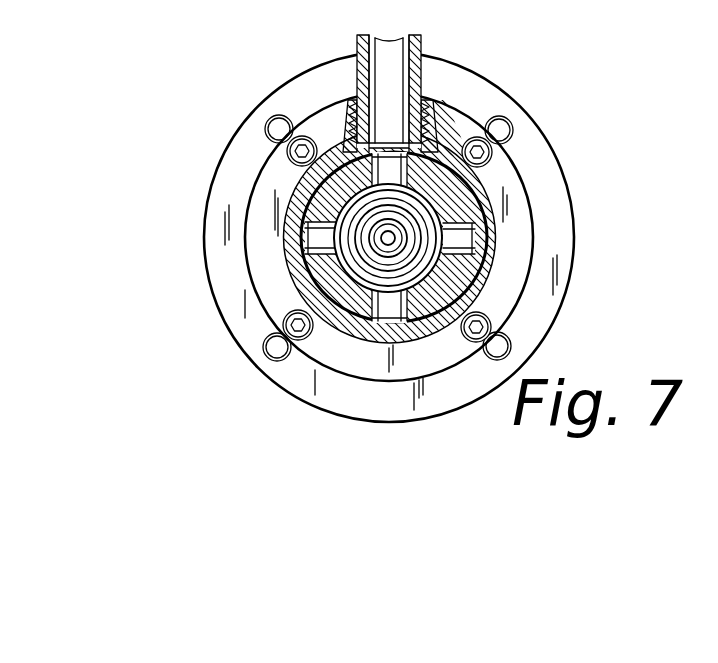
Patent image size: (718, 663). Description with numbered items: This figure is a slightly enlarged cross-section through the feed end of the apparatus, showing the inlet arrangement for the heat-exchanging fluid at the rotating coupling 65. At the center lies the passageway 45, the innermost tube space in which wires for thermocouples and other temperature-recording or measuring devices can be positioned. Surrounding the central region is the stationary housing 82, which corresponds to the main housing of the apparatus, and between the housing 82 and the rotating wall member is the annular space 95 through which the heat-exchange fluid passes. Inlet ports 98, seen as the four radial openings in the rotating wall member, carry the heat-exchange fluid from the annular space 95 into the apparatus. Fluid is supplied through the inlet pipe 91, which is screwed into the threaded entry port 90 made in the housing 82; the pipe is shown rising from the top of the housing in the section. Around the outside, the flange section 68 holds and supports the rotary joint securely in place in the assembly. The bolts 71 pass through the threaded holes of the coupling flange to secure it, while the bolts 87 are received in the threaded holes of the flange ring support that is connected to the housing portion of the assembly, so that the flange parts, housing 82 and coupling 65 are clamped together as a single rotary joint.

The passageway 45 is at (389, 239).
The rotating coupling 65 is at (594, 179).
The flange section 68 is at (578, 227).
The bolt 71 is at (282, 127).
The stationary housing 82 is at (441, 149).
The bolt 87 is at (310, 140).
The threaded entry port 90 is at (352, 118).
The inlet pipe 91 is at (423, 46).
The annular space 95 is at (307, 193).
The inlet ports 98 is at (313, 241).